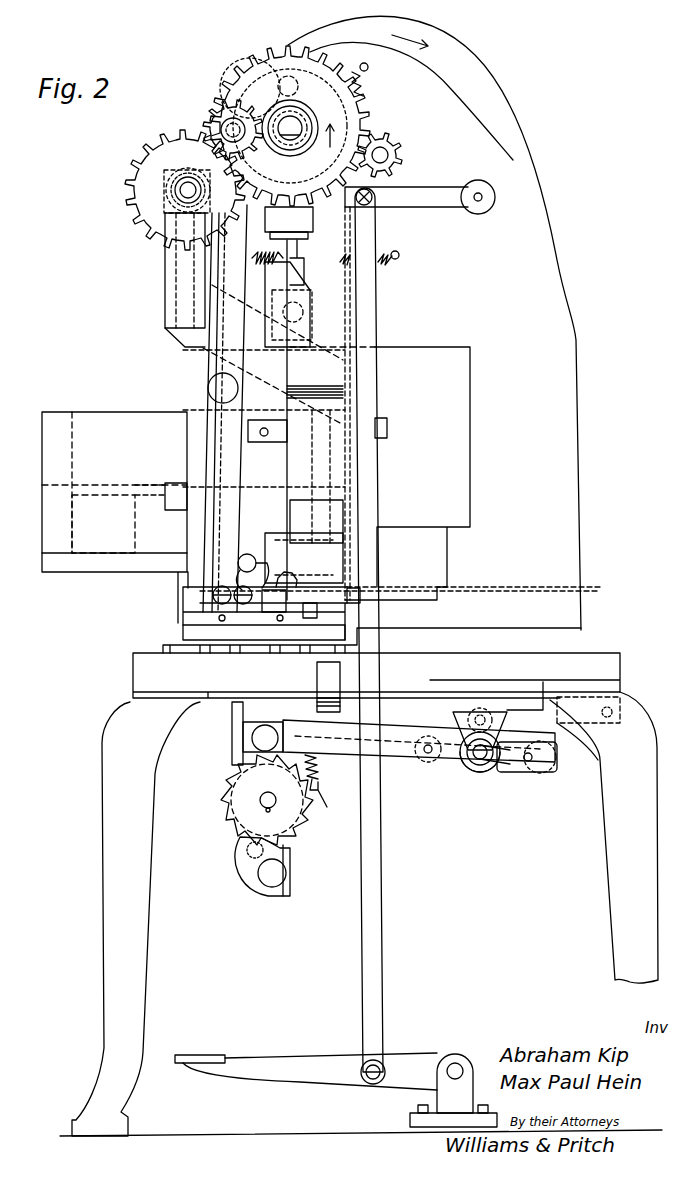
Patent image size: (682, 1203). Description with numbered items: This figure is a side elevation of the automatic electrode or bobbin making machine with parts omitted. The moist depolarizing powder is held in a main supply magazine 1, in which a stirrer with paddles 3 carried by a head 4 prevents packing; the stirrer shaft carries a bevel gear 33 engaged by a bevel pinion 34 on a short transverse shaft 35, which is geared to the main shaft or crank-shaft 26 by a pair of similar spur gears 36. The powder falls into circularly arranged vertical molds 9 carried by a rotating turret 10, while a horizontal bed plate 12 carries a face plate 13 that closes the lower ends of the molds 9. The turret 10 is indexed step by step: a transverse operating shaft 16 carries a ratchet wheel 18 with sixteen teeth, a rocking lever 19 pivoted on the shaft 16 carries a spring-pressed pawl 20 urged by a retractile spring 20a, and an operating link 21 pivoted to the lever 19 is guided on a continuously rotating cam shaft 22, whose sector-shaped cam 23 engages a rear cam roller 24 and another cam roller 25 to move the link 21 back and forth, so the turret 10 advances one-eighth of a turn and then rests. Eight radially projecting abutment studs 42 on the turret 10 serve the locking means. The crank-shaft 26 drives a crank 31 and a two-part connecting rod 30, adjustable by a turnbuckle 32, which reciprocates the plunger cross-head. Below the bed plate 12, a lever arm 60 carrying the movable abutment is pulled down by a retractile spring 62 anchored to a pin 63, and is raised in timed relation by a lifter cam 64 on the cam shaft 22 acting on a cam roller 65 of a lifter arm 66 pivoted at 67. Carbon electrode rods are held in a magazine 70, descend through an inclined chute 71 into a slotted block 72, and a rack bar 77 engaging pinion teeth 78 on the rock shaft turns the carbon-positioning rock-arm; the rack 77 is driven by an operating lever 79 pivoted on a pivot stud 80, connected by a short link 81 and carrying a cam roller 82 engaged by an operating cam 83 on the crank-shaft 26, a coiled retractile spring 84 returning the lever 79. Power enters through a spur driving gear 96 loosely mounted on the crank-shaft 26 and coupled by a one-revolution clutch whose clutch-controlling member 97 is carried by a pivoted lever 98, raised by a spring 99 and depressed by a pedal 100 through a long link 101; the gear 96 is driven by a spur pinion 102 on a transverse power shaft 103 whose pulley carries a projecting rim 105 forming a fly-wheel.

The main supply magazine 1 is at (110, 418).
The stirrer paddles 3 is at (90, 494).
The stirrer head 4 is at (141, 485).
The vertical molds 9 is at (222, 606).
The rotating turret 10 is at (180, 602).
The bed plate 12 is at (133, 676).
The face plate 13 is at (163, 648).
The turret-operating shaft 16 is at (269, 792).
The ratchet wheel 18 is at (226, 812).
The rocking lever 19 is at (292, 851).
The pawl 20 is at (252, 886).
The retractile spring 20a is at (246, 850).
The operating link 21 is at (396, 746).
The cam shaft 22 is at (480, 761).
The sector-shaped cam 23 is at (503, 762).
The rear cam roller 24 is at (530, 773).
The cam roller 25 is at (427, 754).
The main shaft or crank-shaft 26 is at (292, 125).
The connecting rod 30 is at (277, 283).
The crank 31 is at (315, 58).
The turnbuckle 32 is at (270, 220).
The bevel gear 33 is at (151, 228).
The bevel pinion 34 is at (188, 178).
The short transverse shaft 35 is at (184, 186).
The spur gears 36 is at (243, 66).
The abutment studs 42 is at (178, 619).
The lever arm 60 is at (318, 677).
The retractile spring 62 is at (320, 769).
The anchor pin 63 is at (328, 799).
The lifter cam 64 is at (476, 771).
The cam roller 65 is at (485, 708).
The lifter arm 66 is at (557, 723).
The pivot 67 is at (622, 703).
The magazine 70 is at (297, 366).
The inclined chute 71 is at (340, 505).
The slotted block 72 is at (270, 535).
The rack bar 77 is at (238, 565).
The pinion teeth 78 is at (300, 582).
The operating lever 79 is at (241, 463).
The pivot stud 80 is at (208, 388).
The short link 81 is at (243, 606).
The cam roller 82 is at (217, 121).
The operating cam 83 is at (226, 93).
The coiled retractile spring 84 is at (388, 264).
The spur driving gear 96 is at (283, 50).
The clutch-controlling member 97 is at (348, 221).
The pivoted lever 98 is at (460, 205).
The coiled retractile spring 99 is at (370, 78).
The pedal 100 is at (235, 1054).
The long link 101 is at (385, 930).
The spur pinion 102 is at (390, 142).
The power shaft 103 is at (392, 157).
The projecting rim 105 is at (513, 106).